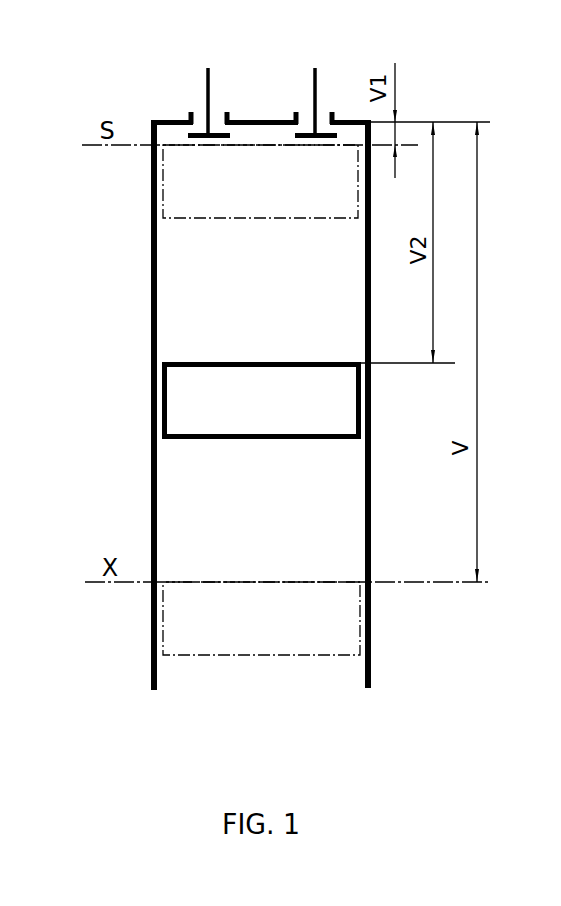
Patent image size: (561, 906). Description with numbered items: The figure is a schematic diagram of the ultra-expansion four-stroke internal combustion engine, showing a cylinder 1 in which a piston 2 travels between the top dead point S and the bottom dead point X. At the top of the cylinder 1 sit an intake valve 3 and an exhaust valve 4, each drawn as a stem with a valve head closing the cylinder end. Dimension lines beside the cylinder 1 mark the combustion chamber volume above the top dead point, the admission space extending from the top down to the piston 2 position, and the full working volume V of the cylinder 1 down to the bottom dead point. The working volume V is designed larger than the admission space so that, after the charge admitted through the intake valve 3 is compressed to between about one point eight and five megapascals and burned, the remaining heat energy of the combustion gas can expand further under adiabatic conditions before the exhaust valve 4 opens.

The cylinder 1 is at (205, 545).
The piston 2 is at (190, 397).
The intake valve 3 is at (205, 107).
The exhaust valve 4 is at (308, 107).